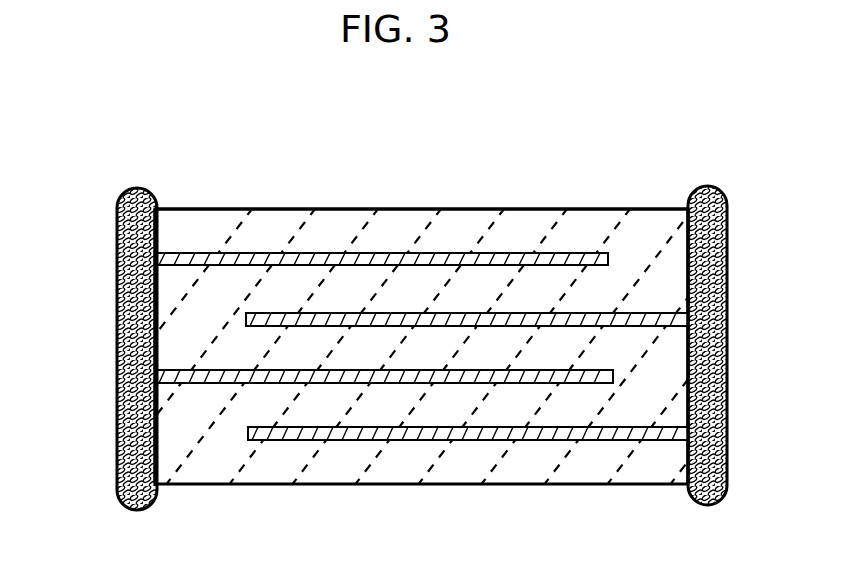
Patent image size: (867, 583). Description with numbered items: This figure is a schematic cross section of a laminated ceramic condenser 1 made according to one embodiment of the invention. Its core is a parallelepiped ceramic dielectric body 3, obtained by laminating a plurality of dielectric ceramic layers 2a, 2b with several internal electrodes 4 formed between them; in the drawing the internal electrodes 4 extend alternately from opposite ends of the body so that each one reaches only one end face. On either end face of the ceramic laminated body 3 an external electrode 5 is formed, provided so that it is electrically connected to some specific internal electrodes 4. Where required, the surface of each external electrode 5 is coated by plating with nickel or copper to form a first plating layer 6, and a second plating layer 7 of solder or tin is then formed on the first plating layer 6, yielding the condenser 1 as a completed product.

The laminated ceramic condenser 1 is at (150, 138).
The dielectric ceramic layer 2a is at (462, 232).
The dielectric ceramic layer 2b is at (537, 277).
The ceramic dielectric body 3 is at (330, 203).
The internal electrode 4 is at (208, 257).
The external electrode 5 is at (118, 246).
The first plating layer 6 is at (118, 320).
The second plating layer 7 is at (118, 393).